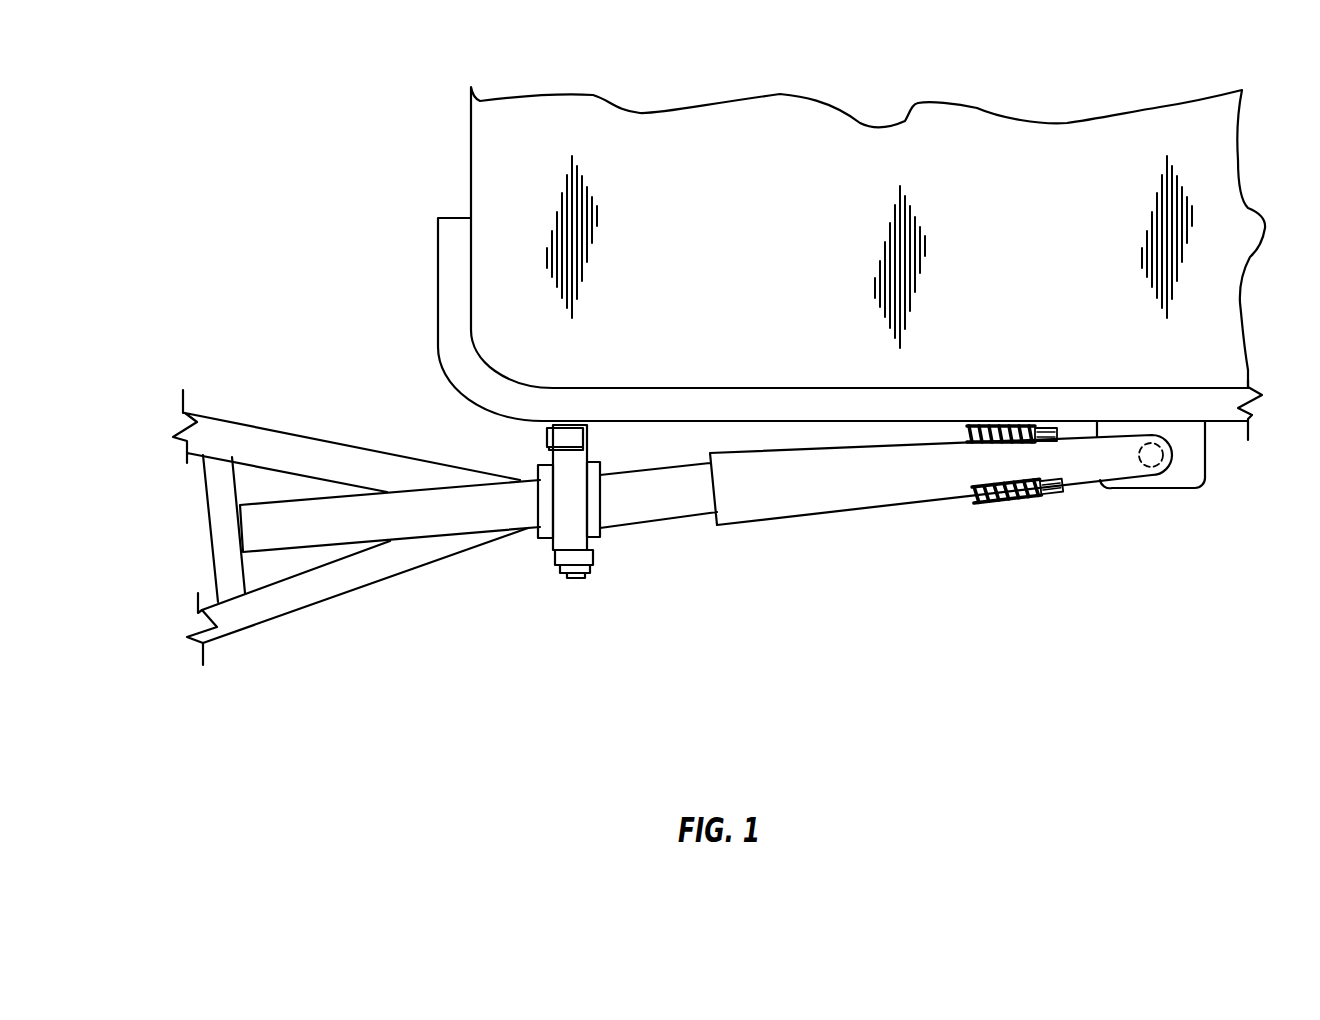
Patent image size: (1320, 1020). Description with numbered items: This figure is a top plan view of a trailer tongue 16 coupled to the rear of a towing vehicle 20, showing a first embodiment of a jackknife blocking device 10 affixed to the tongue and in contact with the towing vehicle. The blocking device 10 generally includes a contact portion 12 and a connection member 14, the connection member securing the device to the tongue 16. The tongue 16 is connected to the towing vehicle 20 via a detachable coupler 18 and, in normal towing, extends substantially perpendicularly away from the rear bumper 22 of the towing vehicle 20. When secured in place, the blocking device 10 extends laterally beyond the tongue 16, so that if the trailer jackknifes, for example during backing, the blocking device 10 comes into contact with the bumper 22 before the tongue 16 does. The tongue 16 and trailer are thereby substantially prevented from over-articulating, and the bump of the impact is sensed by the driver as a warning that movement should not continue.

The jackknife blocking device 10 is at (824, 554).
The contact portion 12 is at (572, 530).
The connection member 14 is at (550, 527).
The trailer tongue 16 is at (862, 525).
The detachable coupler 18 is at (1158, 480).
The towing vehicle 20 is at (443, 158).
The rear bumper 22 is at (1218, 410).